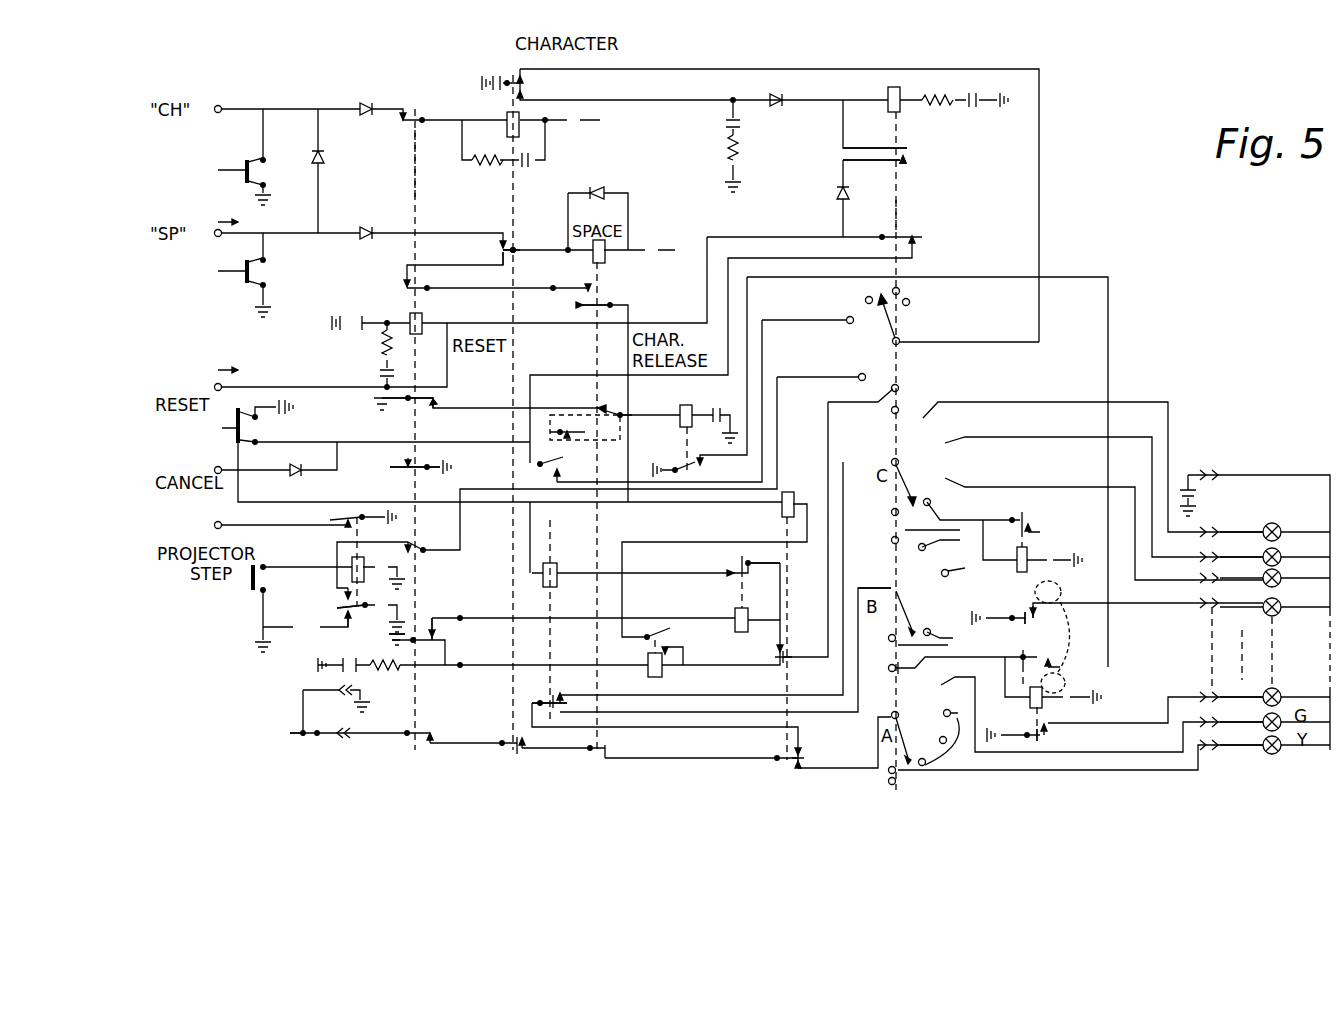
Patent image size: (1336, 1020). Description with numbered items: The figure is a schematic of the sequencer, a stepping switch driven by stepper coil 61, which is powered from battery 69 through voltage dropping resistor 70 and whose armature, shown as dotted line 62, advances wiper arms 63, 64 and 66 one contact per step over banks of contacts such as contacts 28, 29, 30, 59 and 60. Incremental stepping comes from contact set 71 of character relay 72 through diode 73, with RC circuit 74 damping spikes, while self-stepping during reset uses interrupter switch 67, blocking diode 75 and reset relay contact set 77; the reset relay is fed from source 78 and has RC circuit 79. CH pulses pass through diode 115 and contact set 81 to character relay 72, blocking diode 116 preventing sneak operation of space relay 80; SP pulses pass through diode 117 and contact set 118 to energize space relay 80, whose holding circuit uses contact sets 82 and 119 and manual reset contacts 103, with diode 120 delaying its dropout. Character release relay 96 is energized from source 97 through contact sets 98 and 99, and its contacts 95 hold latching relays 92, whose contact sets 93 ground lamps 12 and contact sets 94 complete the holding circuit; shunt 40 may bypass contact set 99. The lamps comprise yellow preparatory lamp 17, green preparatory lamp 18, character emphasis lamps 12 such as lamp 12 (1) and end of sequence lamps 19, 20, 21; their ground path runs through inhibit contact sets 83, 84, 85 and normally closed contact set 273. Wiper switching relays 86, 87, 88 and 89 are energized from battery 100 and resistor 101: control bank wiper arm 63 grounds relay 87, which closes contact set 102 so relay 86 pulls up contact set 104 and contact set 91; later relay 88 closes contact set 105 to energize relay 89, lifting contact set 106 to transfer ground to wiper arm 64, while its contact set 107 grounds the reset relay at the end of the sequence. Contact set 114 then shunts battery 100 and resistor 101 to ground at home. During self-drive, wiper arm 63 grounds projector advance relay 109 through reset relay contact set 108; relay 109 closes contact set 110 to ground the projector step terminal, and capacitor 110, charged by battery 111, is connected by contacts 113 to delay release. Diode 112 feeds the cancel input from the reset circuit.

The diode 115 is at (368, 102).
The diode 116 is at (314, 155).
The diode 117 is at (364, 228).
The relay armature 81 is at (395, 165).
The relay 72 is at (498, 139).
The capacitor contact 71 is at (508, 83).
The diode 73 is at (776, 96).
The RC network 74 is at (745, 152).
The relay 61 is at (888, 94).
The resistor 70 is at (935, 104).
The capacitor 69 is at (974, 107).
The relay contact 67 is at (906, 155).
The diode 75 is at (840, 194).
The relay armature 62 is at (899, 212).
The relay contact 118 is at (502, 252).
The diode 120 is at (600, 188).
The space relay 80 is at (606, 260).
The reset relay 82 is at (402, 289).
The relay contact 119 is at (580, 306).
The capacitor 78 is at (350, 330).
The resistor 79 is at (380, 362).
The relay contact 98 is at (434, 400).
The relay contact 99 is at (614, 410).
The capacitor 97 is at (716, 408).
The character release relay 96 is at (680, 424).
The relay contact 95 is at (692, 468).
The switch 63 is at (890, 324).
The switch contact 28 is at (854, 386).
The switch contact 29 is at (895, 524).
The relay 89 is at (721, 496).
The transistor 103 is at (244, 432).
The diode 112 is at (296, 476).
The relay contact 77 is at (404, 470).
The switch 40 is at (585, 427).
The relay contact 107 is at (566, 453).
The switch blade 64 is at (906, 480).
The switch contact 60 is at (963, 587).
The cam 1 is at (1053, 683).
The switch contact 59 is at (902, 538).
The relay 86 is at (784, 514).
The relay contact 110 is at (334, 520).
The relay 109 is at (350, 562).
The relay contact 108 is at (414, 553).
The relay contact 113 is at (338, 607).
The relay contact 111 is at (432, 626).
The relay contact 105 is at (740, 562).
The relay 88 is at (736, 612).
The relay contact 102 is at (668, 636).
The relay contact 104 is at (790, 656).
The switch contact 30 is at (896, 638).
The relay contact 94 is at (1032, 522).
The relay 92 is at (1016, 555).
The relay contact 93 is at (1034, 625).
The relay 87 is at (677, 671).
The capacitor 100 is at (342, 677).
The resistor 101 is at (386, 675).
The relay contact 114 is at (440, 645).
The relay contact 106 is at (546, 704).
The relay contact 83 is at (436, 738).
The relay contact 84 is at (530, 744).
The relay contact 85 is at (612, 745).
The relay contact 91 is at (806, 756).
The switch 66 is at (905, 740).
The line 273 is at (300, 742).
The lamp 21 is at (1280, 527).
The lamp 20 is at (1281, 555).
The lamp 19 is at (1281, 577).
The lamp 12 is at (1247, 652).
The lamp 18 is at (1263, 722).
The lamp 17 is at (1263, 745).